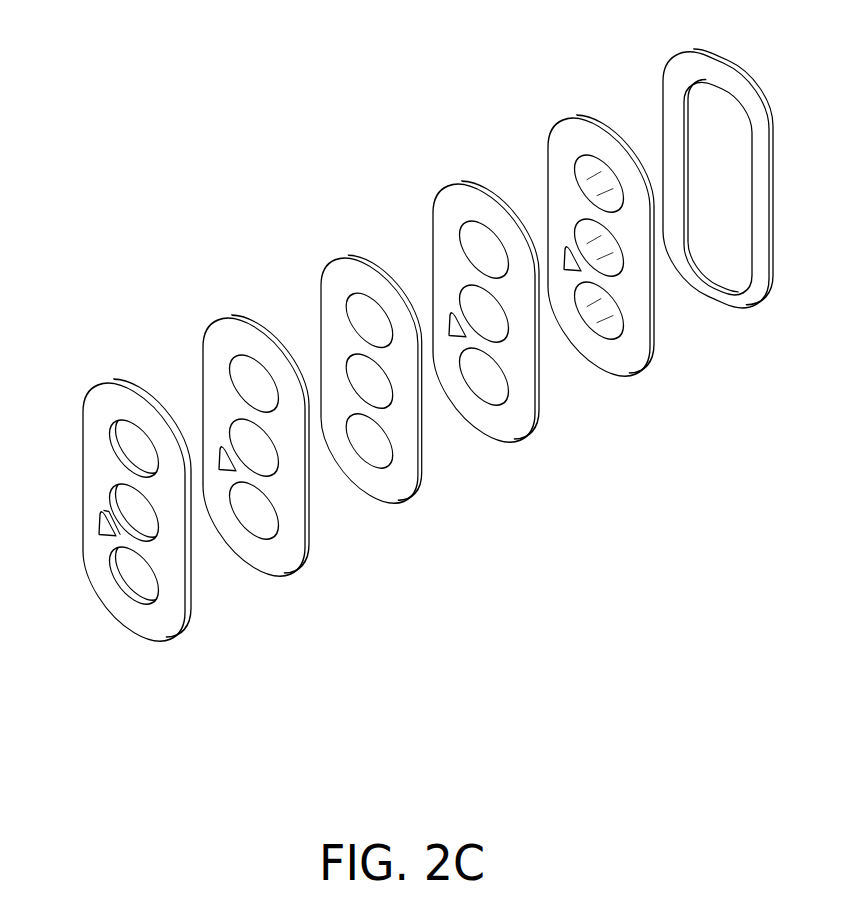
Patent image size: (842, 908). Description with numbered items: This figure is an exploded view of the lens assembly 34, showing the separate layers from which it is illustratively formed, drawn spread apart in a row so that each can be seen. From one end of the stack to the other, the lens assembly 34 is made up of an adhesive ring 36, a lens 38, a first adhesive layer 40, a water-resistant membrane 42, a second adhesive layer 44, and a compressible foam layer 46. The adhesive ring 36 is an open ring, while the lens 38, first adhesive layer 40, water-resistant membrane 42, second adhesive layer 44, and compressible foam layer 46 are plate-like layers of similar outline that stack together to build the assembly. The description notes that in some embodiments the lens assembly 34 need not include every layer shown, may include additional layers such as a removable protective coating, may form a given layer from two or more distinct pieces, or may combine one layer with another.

The lens assembly 34 is at (207, 137).
The adhesive ring 36 is at (723, 67).
The lens 38 is at (552, 132).
The first adhesive layer 40 is at (430, 240).
The water-resistant membrane 42 is at (318, 308).
The second adhesive layer 44 is at (200, 372).
The compressible foam layer 46 is at (97, 393).